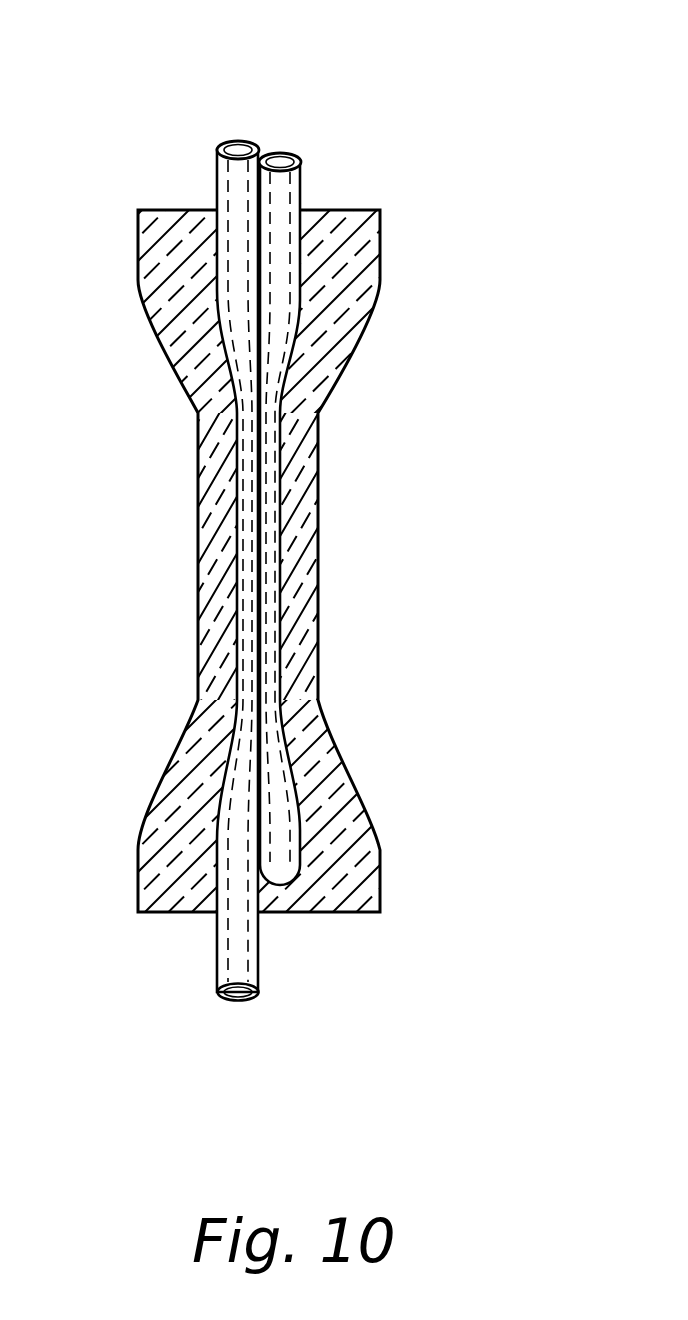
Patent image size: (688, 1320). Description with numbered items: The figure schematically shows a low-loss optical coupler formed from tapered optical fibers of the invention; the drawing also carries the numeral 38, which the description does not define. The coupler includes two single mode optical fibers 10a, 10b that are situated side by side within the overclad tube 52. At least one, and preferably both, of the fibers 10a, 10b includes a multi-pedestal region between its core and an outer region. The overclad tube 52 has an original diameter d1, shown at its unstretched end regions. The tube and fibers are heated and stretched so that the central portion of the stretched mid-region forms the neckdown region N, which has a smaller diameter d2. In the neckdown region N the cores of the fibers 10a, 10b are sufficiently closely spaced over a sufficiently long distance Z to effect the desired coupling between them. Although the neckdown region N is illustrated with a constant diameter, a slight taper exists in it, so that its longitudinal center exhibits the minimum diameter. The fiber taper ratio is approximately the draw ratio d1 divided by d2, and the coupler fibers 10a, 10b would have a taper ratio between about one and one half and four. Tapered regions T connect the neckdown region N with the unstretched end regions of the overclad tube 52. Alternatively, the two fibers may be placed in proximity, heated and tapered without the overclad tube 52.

The single mode optical fiber 10a is at (238, 185).
The single mode optical fiber 10b is at (282, 190).
The overclad tube 52 is at (160, 250).
The connector assembly 38 is at (458, 20).
The tapered regions T is at (350, 350).
The neckdown region N is at (318, 500).
The coupling distance Z is at (85, 413).
The original diameter of the tube d1 is at (140, 920).
The neckdown region diameter d2 is at (133, 625).